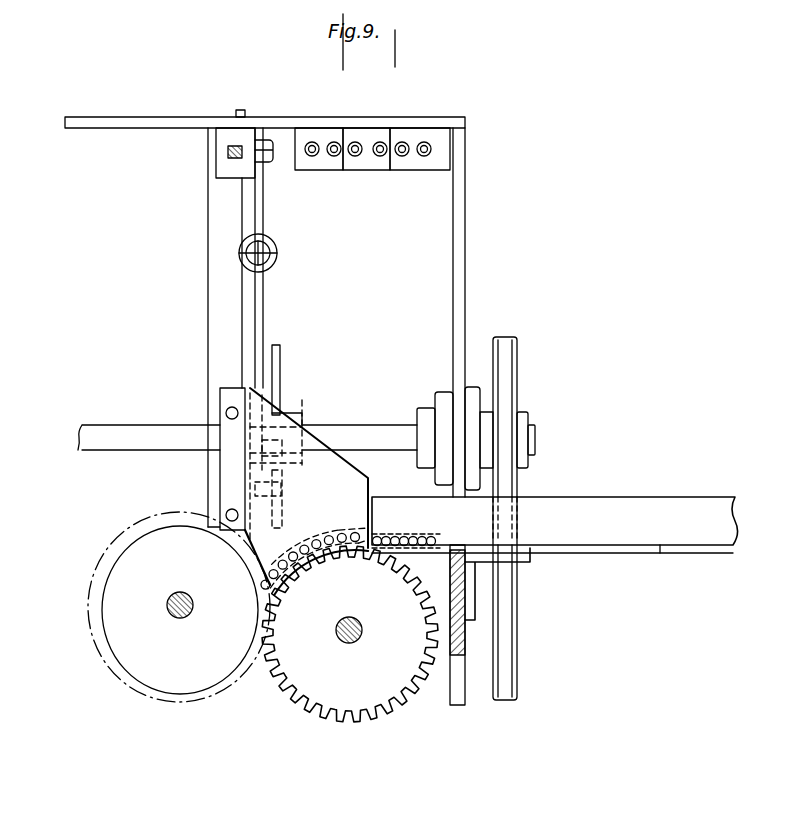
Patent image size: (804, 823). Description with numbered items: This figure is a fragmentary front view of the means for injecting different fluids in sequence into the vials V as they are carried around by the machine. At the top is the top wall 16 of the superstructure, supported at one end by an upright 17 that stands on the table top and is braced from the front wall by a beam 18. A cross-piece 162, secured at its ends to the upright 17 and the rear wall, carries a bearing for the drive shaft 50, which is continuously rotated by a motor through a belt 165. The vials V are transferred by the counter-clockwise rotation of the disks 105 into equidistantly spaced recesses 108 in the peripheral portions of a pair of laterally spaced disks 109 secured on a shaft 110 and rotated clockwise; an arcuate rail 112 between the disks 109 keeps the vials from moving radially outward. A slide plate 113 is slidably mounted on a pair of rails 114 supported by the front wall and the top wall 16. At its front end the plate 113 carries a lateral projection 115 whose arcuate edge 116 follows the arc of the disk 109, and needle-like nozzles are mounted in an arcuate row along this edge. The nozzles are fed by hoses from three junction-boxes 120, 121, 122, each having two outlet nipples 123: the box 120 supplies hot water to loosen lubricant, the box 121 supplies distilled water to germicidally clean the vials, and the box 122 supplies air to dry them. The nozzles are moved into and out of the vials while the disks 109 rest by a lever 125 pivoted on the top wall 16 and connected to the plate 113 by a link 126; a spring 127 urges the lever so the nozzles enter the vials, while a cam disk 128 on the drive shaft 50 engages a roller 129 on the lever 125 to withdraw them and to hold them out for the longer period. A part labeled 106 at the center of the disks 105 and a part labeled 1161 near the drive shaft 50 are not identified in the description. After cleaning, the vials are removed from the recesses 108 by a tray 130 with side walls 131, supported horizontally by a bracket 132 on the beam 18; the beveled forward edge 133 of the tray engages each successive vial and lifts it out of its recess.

The top wall 16 is at (180, 121).
The upright 17 is at (460, 232).
The beam 18 is at (465, 629).
The drive shaft 50 is at (110, 430).
The disks 105 is at (196, 666).
The wheel hub 106 is at (200, 580).
The recesses 108 is at (368, 711).
The disks 109 is at (340, 678).
The shaft 110 is at (357, 635).
The arcuate rail 112 is at (297, 542).
The slide plate 113 is at (236, 388).
The rails 114 is at (226, 413).
The lateral projection 115 is at (361, 482).
The arcuate edge 116 is at (308, 565).
The shaft block 1161 is at (424, 410).
The junction-box 120 is at (303, 133).
The junction-box 121 is at (370, 133).
The junction-box 122 is at (437, 133).
The outlet nipples 123 is at (314, 156).
The lever 125 is at (262, 286).
The link 126 is at (250, 480).
The spring 127 is at (278, 248).
The cam disk 128 is at (280, 360).
The roller 129 is at (284, 487).
The tray 130 is at (655, 550).
The side walls 131 is at (626, 507).
The bracket 132 is at (530, 555).
The beveled edge 133 is at (384, 531).
The cross-piece 162 is at (473, 387).
The belt 165 is at (506, 686).
The vials V is at (434, 540).